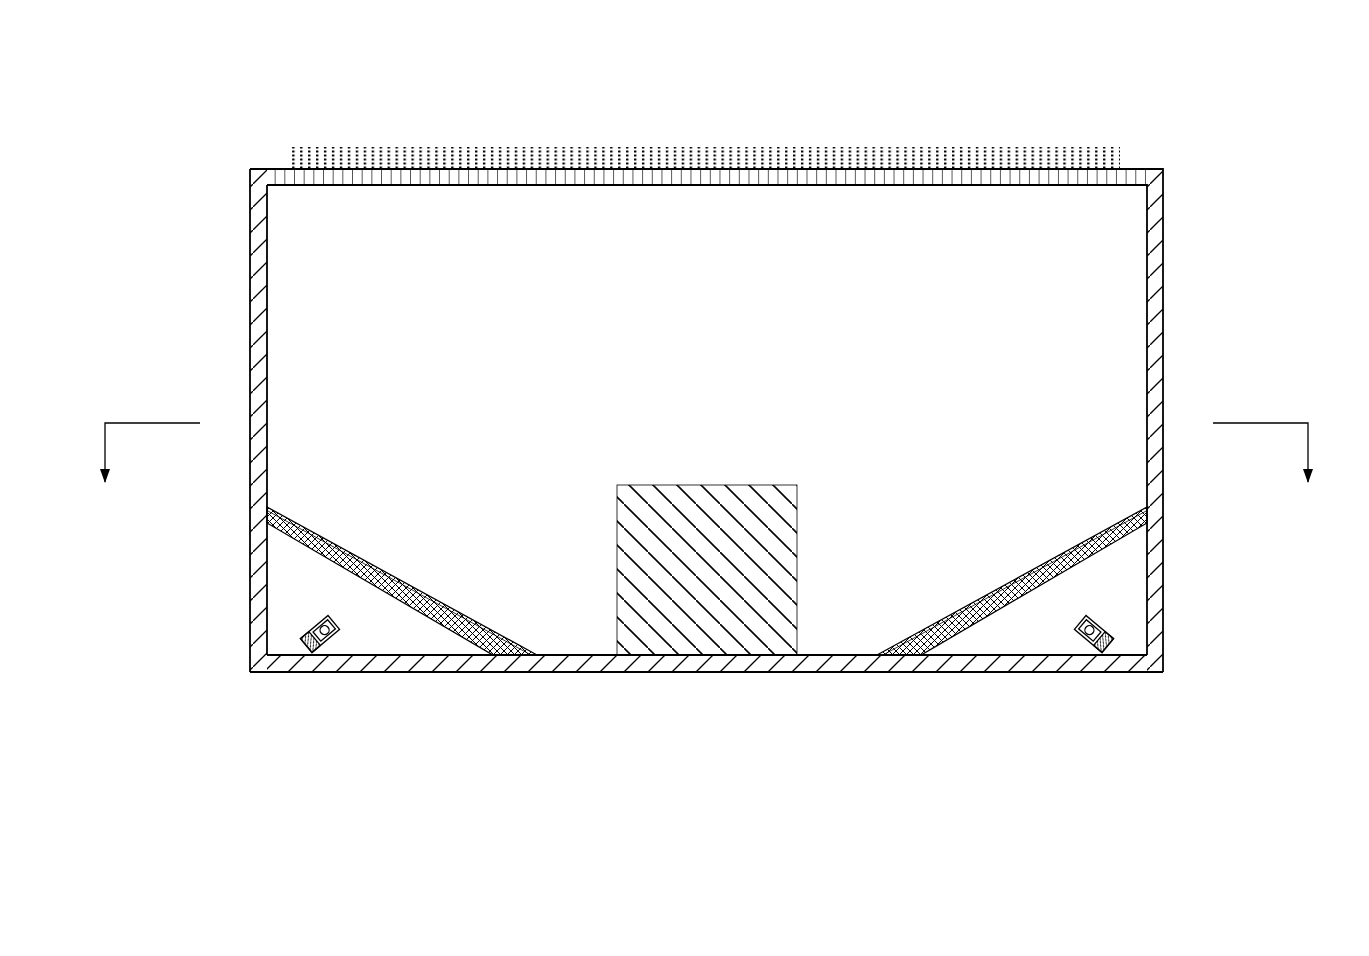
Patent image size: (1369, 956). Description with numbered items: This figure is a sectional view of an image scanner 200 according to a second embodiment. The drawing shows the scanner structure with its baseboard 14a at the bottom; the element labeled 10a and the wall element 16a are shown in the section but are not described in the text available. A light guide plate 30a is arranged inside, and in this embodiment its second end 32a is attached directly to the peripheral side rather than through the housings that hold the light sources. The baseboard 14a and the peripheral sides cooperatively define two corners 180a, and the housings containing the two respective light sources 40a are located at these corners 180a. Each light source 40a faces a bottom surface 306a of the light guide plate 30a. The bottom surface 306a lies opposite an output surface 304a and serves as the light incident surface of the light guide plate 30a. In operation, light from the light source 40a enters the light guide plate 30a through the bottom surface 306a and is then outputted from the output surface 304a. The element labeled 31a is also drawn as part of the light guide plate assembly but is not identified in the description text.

The image scanner 200 is at (252, 80).
The housing 10a is at (218, 312).
The baseboard 14a is at (560, 658).
The side wall 16a is at (260, 228).
The light guide plate 30a is at (133, 610).
The substrate 31a is at (453, 625).
The second end 32a is at (305, 533).
The light source 40a is at (1107, 637).
The corner 180a is at (283, 564).
The output surface 304a is at (933, 619).
The bottom surface 306a is at (1082, 562).